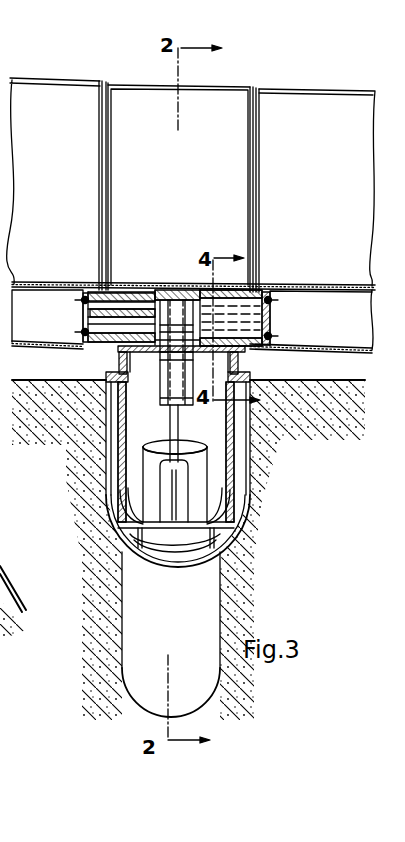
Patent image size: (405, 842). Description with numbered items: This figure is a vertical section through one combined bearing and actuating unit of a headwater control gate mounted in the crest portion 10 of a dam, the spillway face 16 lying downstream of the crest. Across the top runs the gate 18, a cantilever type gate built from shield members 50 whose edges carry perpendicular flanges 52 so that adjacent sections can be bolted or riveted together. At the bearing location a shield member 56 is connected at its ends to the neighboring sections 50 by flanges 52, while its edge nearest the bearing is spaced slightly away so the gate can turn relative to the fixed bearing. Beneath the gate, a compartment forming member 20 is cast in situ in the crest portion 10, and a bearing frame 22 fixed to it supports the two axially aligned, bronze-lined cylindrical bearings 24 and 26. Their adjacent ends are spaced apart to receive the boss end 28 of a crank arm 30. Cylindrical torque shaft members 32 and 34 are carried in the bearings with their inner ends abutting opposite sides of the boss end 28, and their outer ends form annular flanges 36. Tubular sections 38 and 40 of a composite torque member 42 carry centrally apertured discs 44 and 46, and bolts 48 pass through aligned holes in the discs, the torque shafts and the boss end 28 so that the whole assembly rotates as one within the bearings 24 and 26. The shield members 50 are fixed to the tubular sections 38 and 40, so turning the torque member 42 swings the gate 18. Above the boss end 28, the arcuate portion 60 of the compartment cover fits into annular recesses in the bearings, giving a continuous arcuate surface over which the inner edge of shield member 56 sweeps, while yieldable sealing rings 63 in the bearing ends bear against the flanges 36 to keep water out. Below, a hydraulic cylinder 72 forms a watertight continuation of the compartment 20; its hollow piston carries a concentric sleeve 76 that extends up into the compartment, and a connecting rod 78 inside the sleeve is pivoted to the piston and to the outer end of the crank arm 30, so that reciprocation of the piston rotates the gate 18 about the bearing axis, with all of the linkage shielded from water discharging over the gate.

The crest portion 10 is at (26, 500).
The spillway face 16 is at (0, 552).
The gate 18 is at (240, 74).
The compartment forming member 20 is at (195, 466).
The bearing frame 22 is at (118, 358).
The cylindrical bearing 24 is at (131, 288).
The cylindrical bearing 26 is at (252, 290).
The boss end 28 is at (172, 290).
The crank arm 30 is at (130, 405).
The torque shaft member 32 is at (70, 318).
The torque shaft member 34 is at (232, 308).
The annular flange 36 is at (95, 290).
The tubular section 38 is at (48, 283).
The tubular section 40 is at (336, 268).
The composite torque member 42 is at (378, 286).
The centrally apertured disc 44 is at (55, 342).
The centrally apertured disc 46 is at (288, 346).
The bolts 48 is at (118, 288).
The shield member 50 is at (52, 103).
The perpendicular flange 52 is at (99, 155).
The shield member 56 is at (142, 103).
The arcuate portion 60 is at (152, 288).
The sealing ring 63 is at (102, 282).
The hydraulic cylinder 72 is at (205, 596).
The piston sleeve 76 is at (235, 515).
The connecting rod 78 is at (176, 416).